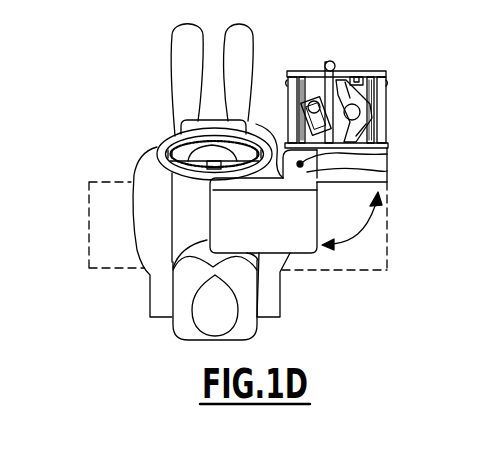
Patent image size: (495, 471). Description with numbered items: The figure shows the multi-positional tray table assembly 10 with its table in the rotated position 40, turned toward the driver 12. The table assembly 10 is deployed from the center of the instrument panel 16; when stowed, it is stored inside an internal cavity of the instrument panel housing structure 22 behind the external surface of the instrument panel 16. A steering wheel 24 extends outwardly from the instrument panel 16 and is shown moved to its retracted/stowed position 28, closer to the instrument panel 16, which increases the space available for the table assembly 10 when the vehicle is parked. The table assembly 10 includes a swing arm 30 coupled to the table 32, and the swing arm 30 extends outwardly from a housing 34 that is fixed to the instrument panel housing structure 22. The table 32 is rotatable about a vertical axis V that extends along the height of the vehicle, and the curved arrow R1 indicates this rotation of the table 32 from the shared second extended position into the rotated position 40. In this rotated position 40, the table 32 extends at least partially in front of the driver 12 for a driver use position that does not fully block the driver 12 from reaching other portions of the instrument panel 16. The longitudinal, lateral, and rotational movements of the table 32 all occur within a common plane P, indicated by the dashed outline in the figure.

The multi-positional tray table assembly 10 is at (210, 218).
The driver 12 is at (183, 324).
The instrument panel 16 is at (351, 77).
The instrument panel housing structure 22 is at (313, 85).
The steering wheel 24 is at (214, 133).
The retracted/stowed position 28 is at (163, 140).
The swing arm 30 is at (364, 169).
The table 32 is at (283, 222).
The housing 34 is at (387, 100).
The rotated position 40 is at (303, 252).
The common plane P is at (89, 228).
The vertical axis V is at (387, 154).
The rotation direction R1 is at (387, 260).